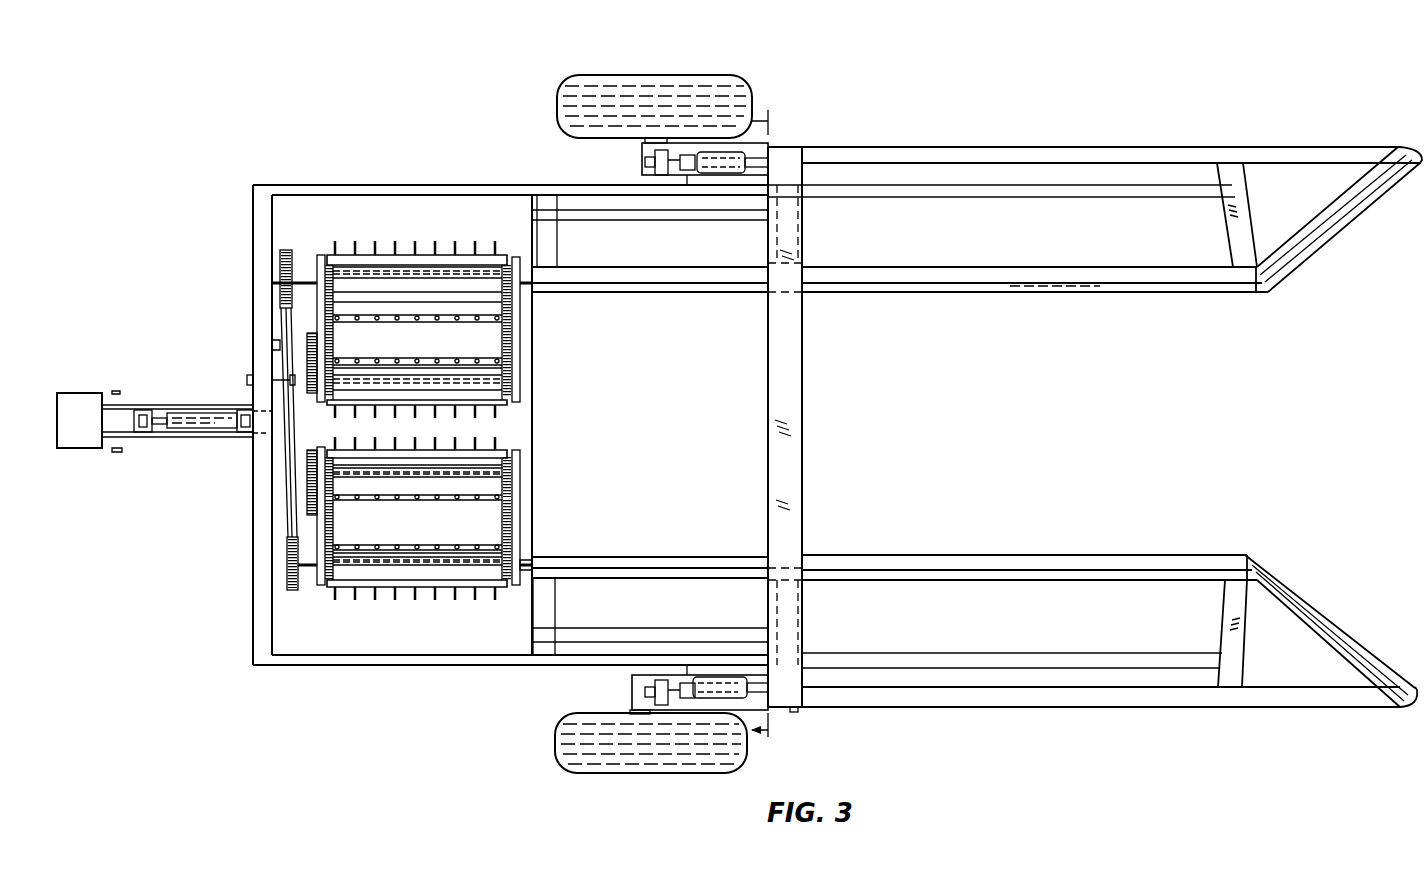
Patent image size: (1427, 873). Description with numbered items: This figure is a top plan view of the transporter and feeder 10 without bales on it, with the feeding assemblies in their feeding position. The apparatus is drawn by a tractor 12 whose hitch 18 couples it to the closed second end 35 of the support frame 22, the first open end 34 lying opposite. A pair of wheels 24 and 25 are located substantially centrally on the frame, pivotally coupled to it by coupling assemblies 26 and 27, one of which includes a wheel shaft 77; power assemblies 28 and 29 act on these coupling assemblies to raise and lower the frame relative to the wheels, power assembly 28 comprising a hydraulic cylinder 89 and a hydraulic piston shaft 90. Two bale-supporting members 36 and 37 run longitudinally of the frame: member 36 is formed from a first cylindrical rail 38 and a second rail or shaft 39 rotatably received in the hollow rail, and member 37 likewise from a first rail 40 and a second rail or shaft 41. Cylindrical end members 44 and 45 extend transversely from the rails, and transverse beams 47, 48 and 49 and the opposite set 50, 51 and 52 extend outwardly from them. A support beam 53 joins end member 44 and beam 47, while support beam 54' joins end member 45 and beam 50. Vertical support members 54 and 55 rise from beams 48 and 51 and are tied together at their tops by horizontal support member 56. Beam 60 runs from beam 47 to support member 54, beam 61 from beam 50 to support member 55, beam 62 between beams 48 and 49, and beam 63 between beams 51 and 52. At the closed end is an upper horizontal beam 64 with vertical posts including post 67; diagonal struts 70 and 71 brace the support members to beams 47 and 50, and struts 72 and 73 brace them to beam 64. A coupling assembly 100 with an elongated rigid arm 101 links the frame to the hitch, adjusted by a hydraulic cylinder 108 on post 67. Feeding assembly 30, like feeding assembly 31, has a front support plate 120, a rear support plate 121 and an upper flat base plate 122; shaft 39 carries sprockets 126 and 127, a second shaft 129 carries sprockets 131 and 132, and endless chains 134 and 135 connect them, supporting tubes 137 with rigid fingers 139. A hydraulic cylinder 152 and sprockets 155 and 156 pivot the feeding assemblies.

The transporter and feeder 10 is at (242, 184).
The tractor 12 is at (75, 390).
The hitch 18 is at (85, 395).
The support frame 22 is at (252, 237).
The wheel 24 is at (675, 777).
The wheel 25 is at (656, 78).
The coupling assembly 26 is at (600, 688).
The coupling assembly 27 is at (626, 165).
The power assembly 28 is at (731, 676).
The power assembly 29 is at (722, 173).
The feeding assembly 30 is at (462, 614).
The feeding assembly 31 is at (452, 237).
The first open end 34 is at (1357, 610).
The second closed end 35 is at (232, 336).
The bale-supporting member 36 is at (1087, 557).
The bale-supporting member 37 is at (1018, 294).
The first cylindrical rail 38 is at (950, 557).
The second cylindrical rail or shaft 39 is at (528, 558).
The first rail 40 is at (890, 291).
The second rail or shaft 41 is at (526, 290).
The cylindrical end member 44 is at (1322, 610).
The cylindrical end member 45 is at (1320, 255).
The transverse beam 47 is at (1225, 616).
The transverse beam 48 is at (800, 620).
The transverse beam 49 is at (556, 608).
The beam 50 is at (1222, 226).
The beam 51 is at (810, 252).
The beam 52 is at (555, 257).
The support beam 53 is at (1293, 710).
The support member 54 is at (807, 725).
The support beam 54' is at (1112, 133).
The support member 55 is at (804, 146).
The support member 56 is at (805, 462).
The beam 60 is at (1092, 708).
The beam 61 is at (1000, 148).
The beam 62 is at (662, 628).
The beam 63 is at (645, 221).
The upper horizontal beam 64 is at (253, 482).
The vertical post 67 is at (258, 432).
The diagonal strut 70 is at (1000, 656).
The diagonal strut 71 is at (1000, 195).
The diagonal strut 72 is at (447, 666).
The diagonal strut 73 is at (418, 185).
The wheel shaft 77 is at (632, 712).
The hydraulic cylinder 89 is at (710, 676).
The hydraulic piston shaft 90 is at (685, 678).
The coupling assembly 100 is at (178, 388).
The elongated rigid arm 101 is at (160, 438).
The hydraulic cylinder 108 is at (193, 418).
The front support plate 120 is at (521, 486).
The rear support plate 121 is at (320, 583).
The upper flat base plate 122 is at (506, 514).
The sprocket 126 is at (486, 585).
The sprocket 127 is at (335, 568).
The second shaft 129 is at (482, 448).
The sprocket 131 is at (516, 462).
The sprocket 132 is at (336, 474).
The endless chain 134 is at (490, 520).
The endless chain 135 is at (335, 530).
The tube 137 is at (426, 452).
The rigid finger 139 is at (352, 440).
The hydraulic cylinder 152 is at (275, 524).
The sprocket 155 is at (292, 590).
The sprocket 156 is at (286, 250).